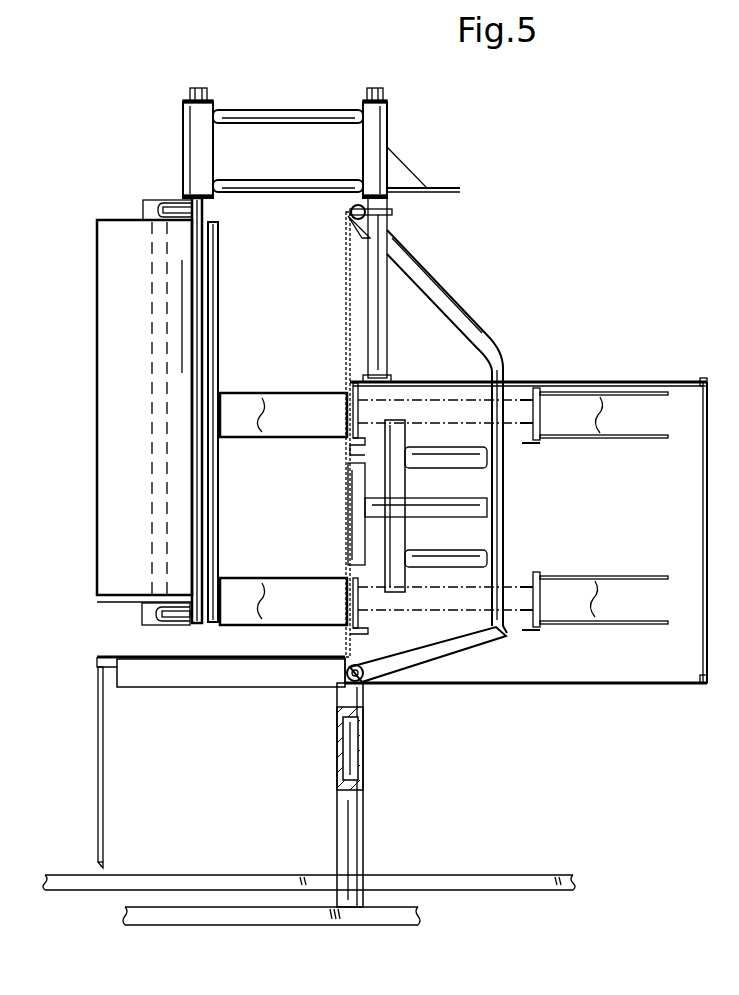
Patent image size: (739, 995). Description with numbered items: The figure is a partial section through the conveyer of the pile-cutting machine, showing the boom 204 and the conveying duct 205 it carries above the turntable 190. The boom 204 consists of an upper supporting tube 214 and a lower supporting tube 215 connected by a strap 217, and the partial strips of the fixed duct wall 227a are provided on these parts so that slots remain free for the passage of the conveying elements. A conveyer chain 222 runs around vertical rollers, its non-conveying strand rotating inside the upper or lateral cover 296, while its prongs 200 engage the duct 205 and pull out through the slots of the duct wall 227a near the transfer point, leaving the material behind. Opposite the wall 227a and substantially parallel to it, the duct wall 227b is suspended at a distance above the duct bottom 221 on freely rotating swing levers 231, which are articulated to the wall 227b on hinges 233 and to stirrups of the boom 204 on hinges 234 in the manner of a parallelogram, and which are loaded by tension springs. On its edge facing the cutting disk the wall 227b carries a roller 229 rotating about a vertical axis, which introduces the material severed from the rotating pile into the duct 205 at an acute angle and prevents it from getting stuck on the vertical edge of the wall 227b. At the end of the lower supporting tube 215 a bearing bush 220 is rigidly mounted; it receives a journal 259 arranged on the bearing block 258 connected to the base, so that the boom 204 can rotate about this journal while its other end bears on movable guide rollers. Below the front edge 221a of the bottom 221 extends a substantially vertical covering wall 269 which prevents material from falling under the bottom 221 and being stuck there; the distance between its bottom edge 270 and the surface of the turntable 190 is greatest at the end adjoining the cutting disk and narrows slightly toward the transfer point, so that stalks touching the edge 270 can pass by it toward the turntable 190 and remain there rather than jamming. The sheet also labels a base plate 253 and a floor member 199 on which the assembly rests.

The turntable 190 is at (309, 864).
The floor base 199 is at (281, 934).
The prongs 200 is at (444, 509).
The boom 204 is at (440, 254).
The conveying duct 205 is at (283, 361).
The upper supporting tube 214 is at (350, 222).
The lower supporting tube 215 is at (364, 680).
The strap 217 is at (467, 316).
The bearing bush 220 is at (338, 722).
The duct bottom 221 is at (188, 666).
The front edge 221a is at (94, 656).
The conveyer chain 222 is at (416, 384).
The duct wall 227a is at (344, 300).
The duct wall 227b is at (216, 477).
The roller 229 is at (112, 236).
The swing levers 231 is at (280, 107).
The hinges 233 is at (388, 130).
The hinges 234 is at (185, 155).
The carriage 253 is at (428, 876).
The bearing block 258 is at (344, 806).
The journal 259 is at (358, 748).
The covering wall 269 is at (98, 770).
The bottom edge 270 is at (106, 864).
The cover 296 is at (576, 380).